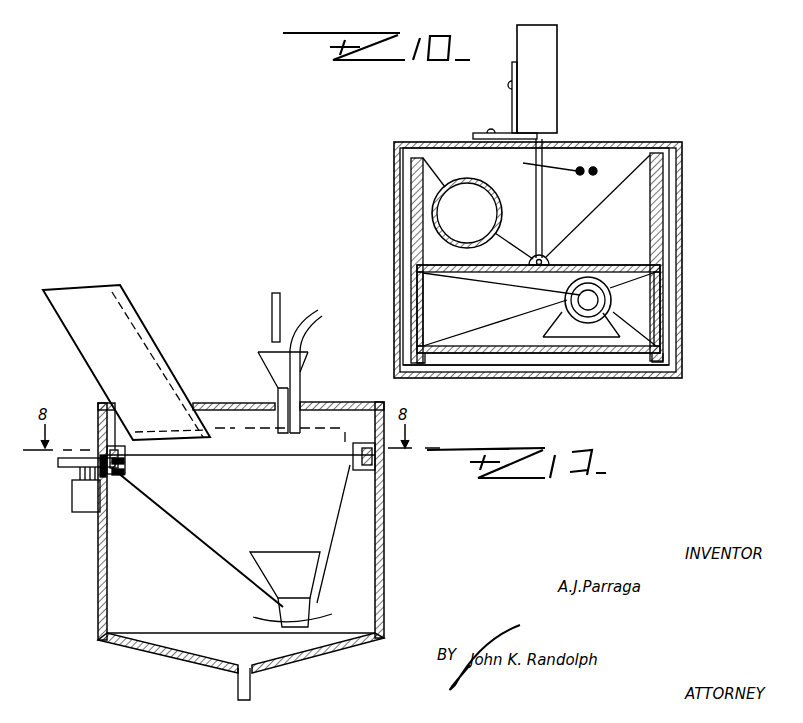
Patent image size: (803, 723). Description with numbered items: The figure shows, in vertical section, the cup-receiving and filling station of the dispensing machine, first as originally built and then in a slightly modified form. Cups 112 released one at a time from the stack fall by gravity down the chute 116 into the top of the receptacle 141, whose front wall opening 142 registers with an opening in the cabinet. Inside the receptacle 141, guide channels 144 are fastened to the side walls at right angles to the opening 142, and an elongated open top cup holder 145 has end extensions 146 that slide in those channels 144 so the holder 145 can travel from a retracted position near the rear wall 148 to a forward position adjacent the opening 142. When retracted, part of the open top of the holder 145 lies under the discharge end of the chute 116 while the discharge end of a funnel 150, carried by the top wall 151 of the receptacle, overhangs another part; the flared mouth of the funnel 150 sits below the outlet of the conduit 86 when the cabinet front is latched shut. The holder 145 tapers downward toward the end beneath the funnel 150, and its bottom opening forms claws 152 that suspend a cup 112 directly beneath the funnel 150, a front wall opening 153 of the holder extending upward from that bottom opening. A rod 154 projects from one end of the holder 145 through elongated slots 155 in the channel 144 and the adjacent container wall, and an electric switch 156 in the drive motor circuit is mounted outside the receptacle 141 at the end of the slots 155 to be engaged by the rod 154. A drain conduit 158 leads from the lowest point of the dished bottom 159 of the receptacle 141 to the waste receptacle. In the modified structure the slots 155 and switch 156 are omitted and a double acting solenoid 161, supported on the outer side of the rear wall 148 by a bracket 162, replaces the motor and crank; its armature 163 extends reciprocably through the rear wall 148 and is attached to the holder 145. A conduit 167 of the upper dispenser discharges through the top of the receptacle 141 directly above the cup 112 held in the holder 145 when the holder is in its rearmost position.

In FIG. 9, the conduit 86 is at (272, 300).
In FIG. 10, the cup 112 is at (586, 301).
In FIG. 9, the cup 112 is at (310, 623).
In FIG. 10, the chute 116 is at (498, 213).
In FIG. 9, the chute 116 is at (148, 359).
In FIG. 9, the receptacle 141 is at (386, 554).
In FIG. 10, the front wall opening 142 is at (638, 380).
In FIG. 9, the guide channels 144 is at (122, 430).
In FIG. 10, the cup holder 145 is at (603, 262).
In FIG. 9, the cup holder 145 is at (196, 534).
In FIG. 10, the end extensions 146 is at (662, 291).
In FIG. 9, the end extensions 146 is at (122, 463).
In FIG. 10, the rear wall 148 is at (612, 143).
In FIG. 10, the funnel 150 is at (532, 163).
In FIG. 9, the funnel 150 is at (278, 376).
In FIG. 9, the top wall 151 is at (325, 402).
In FIG. 9, the claws 152 is at (268, 604).
In FIG. 10, the front wall opening of holder 153 is at (545, 333).
In FIG. 9, the front wall opening of holder 153 is at (296, 556).
In FIG. 9, the rod 154 is at (70, 462).
In FIG. 9, the slots 155 is at (108, 477).
In FIG. 9, the electric switch 156 is at (78, 500).
In FIG. 9, the drain conduit 158 is at (238, 687).
In FIG. 9, the dished bottom 159 is at (306, 649).
In FIG. 10, the double acting solenoid 161 is at (556, 86).
In FIG. 10, the bracket 162 is at (512, 102).
In FIG. 10, the armature 163 is at (543, 221).
In FIG. 10, the conduit 167 is at (597, 169).
In FIG. 9, the conduit 167 is at (301, 363).